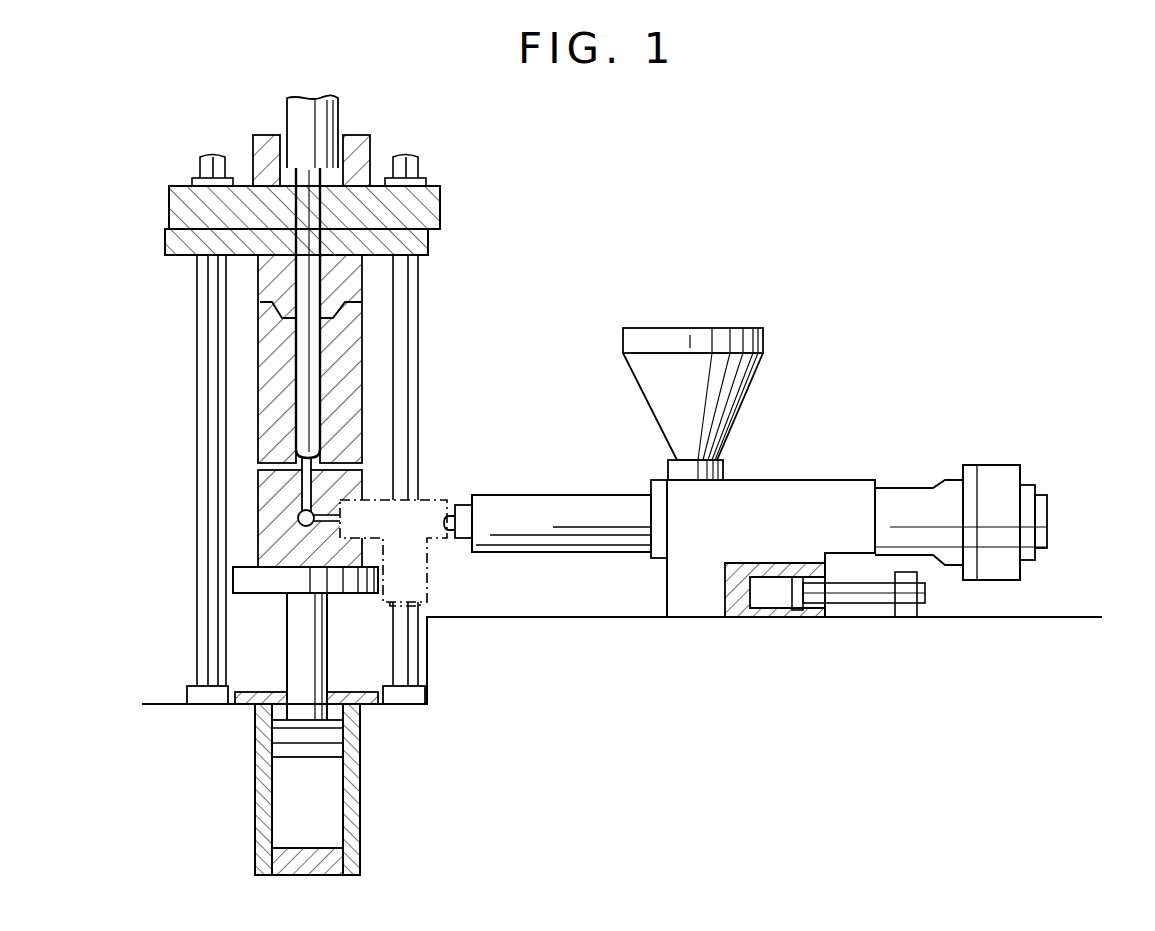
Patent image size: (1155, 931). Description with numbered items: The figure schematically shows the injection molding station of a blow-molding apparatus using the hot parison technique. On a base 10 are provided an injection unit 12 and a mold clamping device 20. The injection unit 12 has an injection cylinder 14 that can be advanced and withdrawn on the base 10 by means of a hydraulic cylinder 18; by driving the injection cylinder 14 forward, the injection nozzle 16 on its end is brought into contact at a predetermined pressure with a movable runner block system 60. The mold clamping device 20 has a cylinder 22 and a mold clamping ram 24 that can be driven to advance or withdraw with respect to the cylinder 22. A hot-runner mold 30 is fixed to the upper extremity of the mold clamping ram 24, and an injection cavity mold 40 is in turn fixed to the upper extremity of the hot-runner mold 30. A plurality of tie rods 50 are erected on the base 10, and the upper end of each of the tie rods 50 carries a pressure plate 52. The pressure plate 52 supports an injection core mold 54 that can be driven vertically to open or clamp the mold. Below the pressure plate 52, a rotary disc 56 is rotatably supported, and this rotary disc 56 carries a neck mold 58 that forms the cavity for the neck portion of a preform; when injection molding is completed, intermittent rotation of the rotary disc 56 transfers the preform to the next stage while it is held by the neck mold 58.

The base 10 is at (1047, 617).
The injection unit 12 is at (792, 480).
The injection cylinder 14 is at (555, 510).
The injection nozzle 16 is at (446, 518).
The hydraulic cylinder 18 is at (783, 632).
The mold clamping device 20 is at (232, 643).
The cylinder 22 is at (360, 827).
The mold clamping ram 24 is at (323, 660).
The hot-runner mold 30 is at (340, 492).
The injection cavity mold 40 is at (350, 407).
The tie rods 50 is at (200, 447).
The pressure plate 52 is at (433, 208).
The injection core mold 54 is at (303, 277).
The rotary disc 56 is at (167, 235).
The neck mold 58 is at (418, 275).
The movable runner block system 60 is at (518, 442).